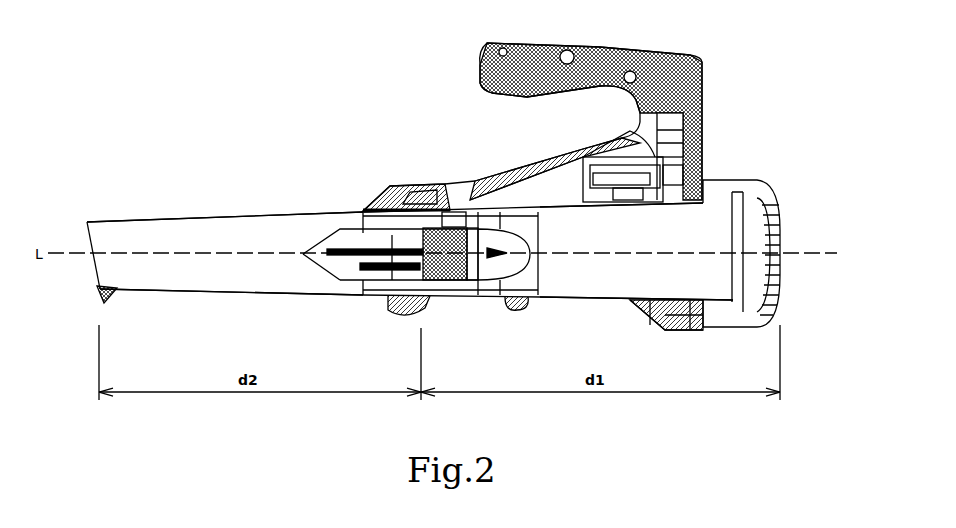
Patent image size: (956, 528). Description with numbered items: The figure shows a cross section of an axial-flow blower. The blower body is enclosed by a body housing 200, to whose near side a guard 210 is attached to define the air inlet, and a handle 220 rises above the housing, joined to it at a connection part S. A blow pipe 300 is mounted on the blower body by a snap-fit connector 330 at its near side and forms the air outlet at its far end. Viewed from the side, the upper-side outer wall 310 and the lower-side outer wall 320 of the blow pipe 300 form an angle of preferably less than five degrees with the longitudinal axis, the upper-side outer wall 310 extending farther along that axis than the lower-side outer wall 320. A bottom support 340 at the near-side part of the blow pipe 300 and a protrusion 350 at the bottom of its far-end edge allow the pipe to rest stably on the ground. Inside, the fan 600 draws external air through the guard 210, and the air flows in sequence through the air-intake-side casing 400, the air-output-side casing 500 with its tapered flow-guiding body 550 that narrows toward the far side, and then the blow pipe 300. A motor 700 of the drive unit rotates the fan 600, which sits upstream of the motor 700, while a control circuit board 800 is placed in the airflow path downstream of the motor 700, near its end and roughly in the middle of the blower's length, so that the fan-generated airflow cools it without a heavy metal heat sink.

The body housing 200 is at (700, 327).
The guard 210 is at (773, 207).
The handle 220 is at (600, 48).
The blow pipe 300 is at (223, 215).
The upper-side outer wall 310 is at (133, 219).
The lower-side outer wall 320 is at (200, 292).
The snap-fit connector 330 is at (398, 186).
The bottom support 340 is at (417, 313).
The protrusion 350 is at (107, 300).
The air-intake-side casing 400 is at (617, 300).
The air-output-side casing 500 is at (473, 296).
The tapered flow-guiding body 550 is at (343, 273).
The fan 600 is at (513, 272).
The motor 700 is at (440, 196).
The control circuit board 800 is at (420, 238).
The connection part S is at (527, 182).